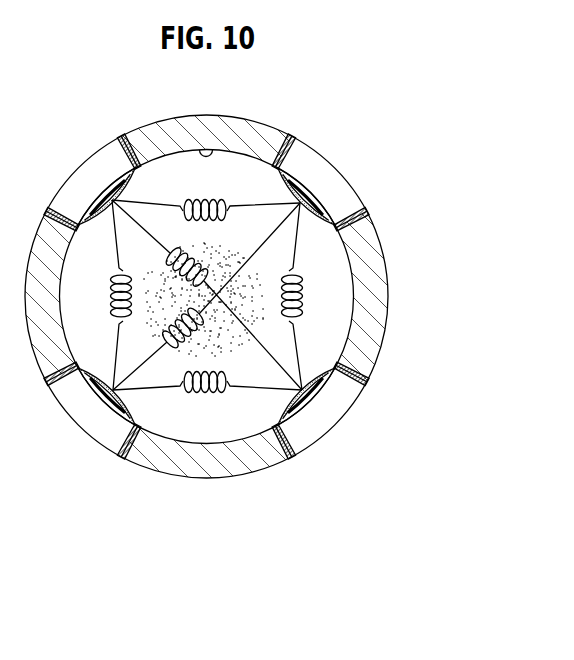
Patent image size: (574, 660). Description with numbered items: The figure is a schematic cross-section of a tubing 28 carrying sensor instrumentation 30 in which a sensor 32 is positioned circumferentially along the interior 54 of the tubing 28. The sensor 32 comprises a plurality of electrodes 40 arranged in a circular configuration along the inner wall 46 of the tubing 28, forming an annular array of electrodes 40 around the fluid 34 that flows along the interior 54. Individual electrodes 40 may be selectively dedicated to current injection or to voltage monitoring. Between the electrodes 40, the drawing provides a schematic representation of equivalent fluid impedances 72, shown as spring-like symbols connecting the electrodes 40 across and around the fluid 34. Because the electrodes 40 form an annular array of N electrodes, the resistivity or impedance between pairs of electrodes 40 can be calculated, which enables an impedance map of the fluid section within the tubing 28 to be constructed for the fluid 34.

The tubing 28 is at (248, 474).
The sensor instrumentation 30 is at (298, 109).
The sensor 32 is at (351, 157).
The fluid 34 is at (236, 356).
The electrodes 40 is at (290, 199).
The inner wall 46 is at (201, 151).
The interior 54 is at (335, 282).
The equivalent fluid impedances 72 is at (203, 257).